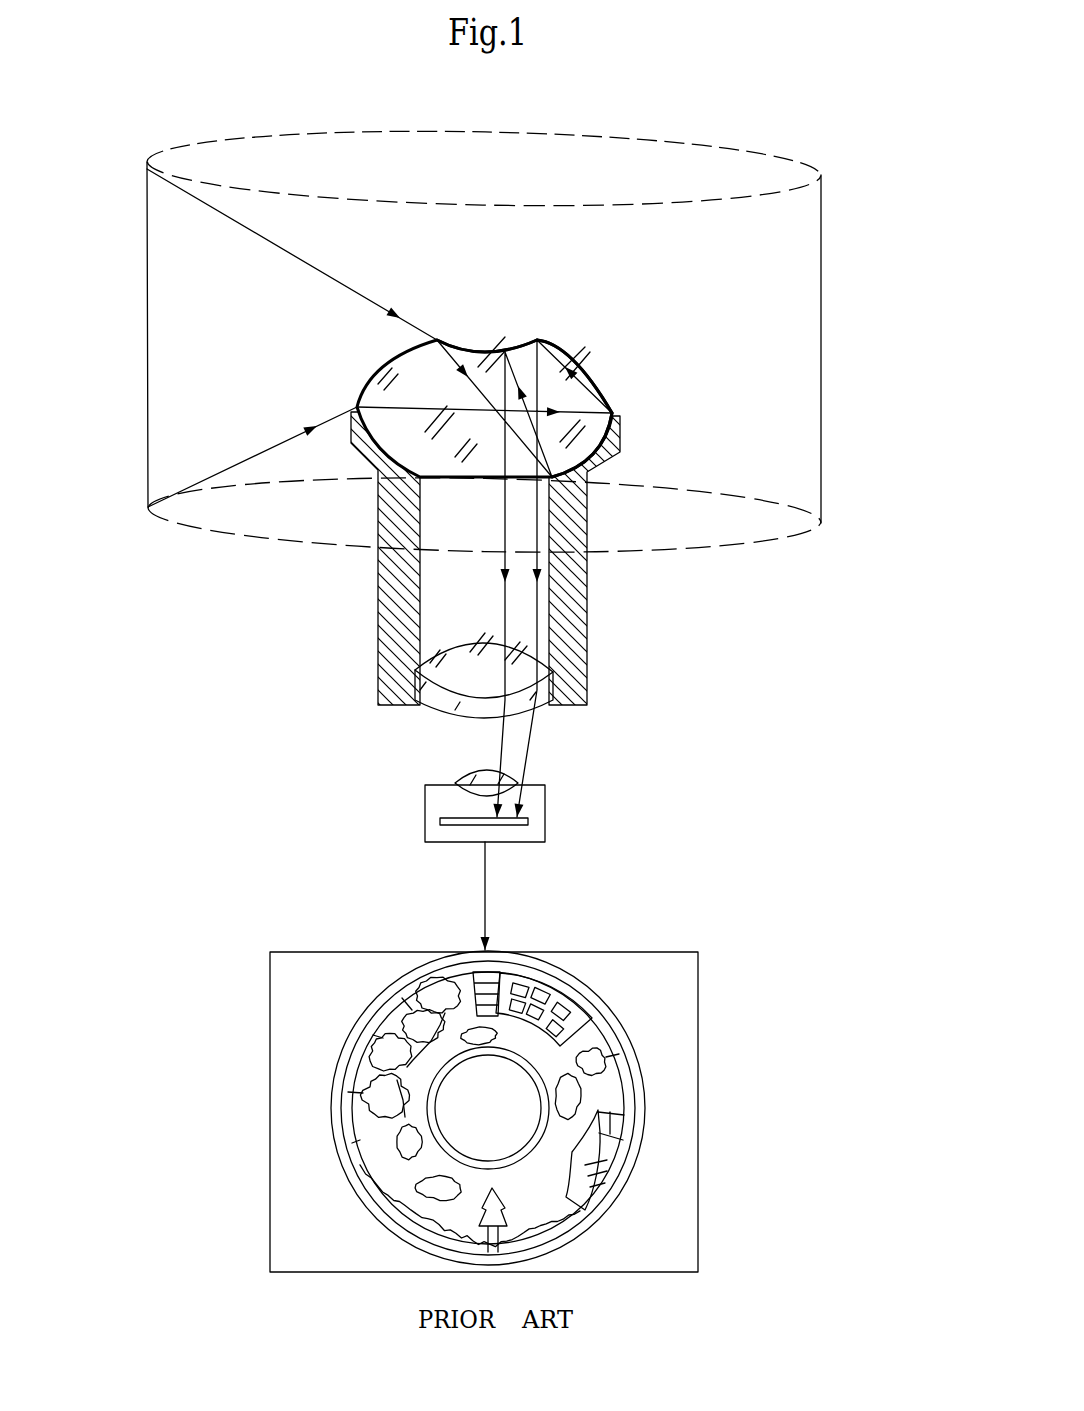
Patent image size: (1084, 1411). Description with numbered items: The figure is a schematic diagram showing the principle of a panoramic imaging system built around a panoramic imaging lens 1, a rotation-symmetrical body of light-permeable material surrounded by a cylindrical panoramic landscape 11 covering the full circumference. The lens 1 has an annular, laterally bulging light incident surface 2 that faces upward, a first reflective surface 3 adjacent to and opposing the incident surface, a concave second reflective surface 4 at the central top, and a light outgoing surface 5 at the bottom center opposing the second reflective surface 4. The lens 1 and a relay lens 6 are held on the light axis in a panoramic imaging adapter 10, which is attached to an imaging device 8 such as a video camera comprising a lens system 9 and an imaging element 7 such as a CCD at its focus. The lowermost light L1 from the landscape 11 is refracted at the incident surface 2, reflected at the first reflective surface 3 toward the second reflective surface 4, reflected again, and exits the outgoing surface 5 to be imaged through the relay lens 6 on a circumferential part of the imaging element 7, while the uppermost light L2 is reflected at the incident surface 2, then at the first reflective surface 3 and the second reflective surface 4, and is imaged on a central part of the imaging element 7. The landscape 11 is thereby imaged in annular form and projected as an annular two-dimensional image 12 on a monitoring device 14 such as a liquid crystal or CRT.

The panoramic imaging lens 1 is at (520, 400).
The light incident surface 2 is at (582, 371).
The first reflective surface 3 is at (613, 456).
The second reflective surface 4 is at (512, 346).
The light outgoing surface 5 is at (447, 482).
The relay lens 6 is at (553, 683).
The imaging element 7 is at (517, 828).
The imaging device 8 is at (520, 805).
The lens system 9 is at (465, 778).
The panoramic imaging adapter 10 is at (526, 558).
The panoramic landscape 11 is at (516, 341).
The annular two-dimensional image 12 is at (551, 1108).
The monitoring device 14 is at (702, 1113).
The lowermost light L1 is at (230, 467).
The uppermost light L2 is at (330, 276).